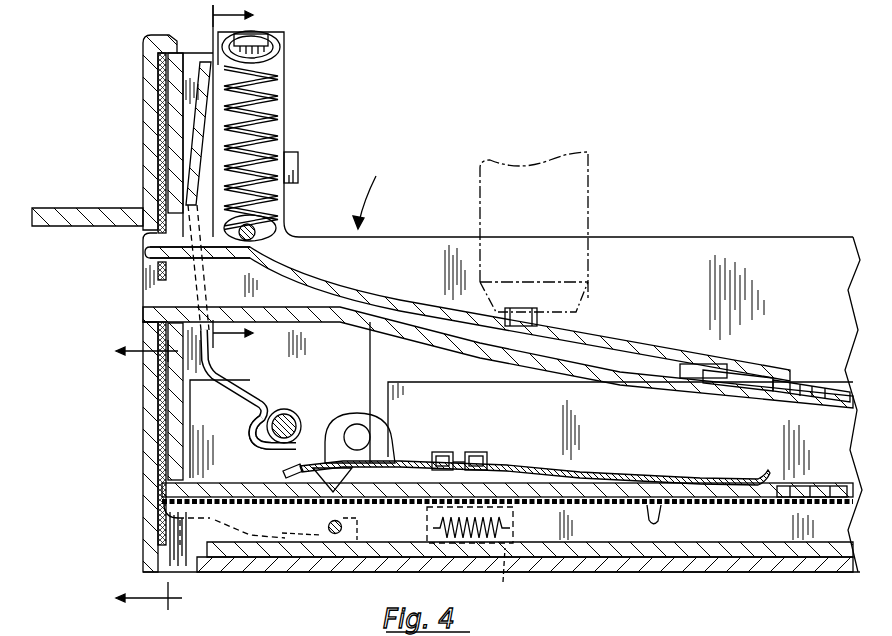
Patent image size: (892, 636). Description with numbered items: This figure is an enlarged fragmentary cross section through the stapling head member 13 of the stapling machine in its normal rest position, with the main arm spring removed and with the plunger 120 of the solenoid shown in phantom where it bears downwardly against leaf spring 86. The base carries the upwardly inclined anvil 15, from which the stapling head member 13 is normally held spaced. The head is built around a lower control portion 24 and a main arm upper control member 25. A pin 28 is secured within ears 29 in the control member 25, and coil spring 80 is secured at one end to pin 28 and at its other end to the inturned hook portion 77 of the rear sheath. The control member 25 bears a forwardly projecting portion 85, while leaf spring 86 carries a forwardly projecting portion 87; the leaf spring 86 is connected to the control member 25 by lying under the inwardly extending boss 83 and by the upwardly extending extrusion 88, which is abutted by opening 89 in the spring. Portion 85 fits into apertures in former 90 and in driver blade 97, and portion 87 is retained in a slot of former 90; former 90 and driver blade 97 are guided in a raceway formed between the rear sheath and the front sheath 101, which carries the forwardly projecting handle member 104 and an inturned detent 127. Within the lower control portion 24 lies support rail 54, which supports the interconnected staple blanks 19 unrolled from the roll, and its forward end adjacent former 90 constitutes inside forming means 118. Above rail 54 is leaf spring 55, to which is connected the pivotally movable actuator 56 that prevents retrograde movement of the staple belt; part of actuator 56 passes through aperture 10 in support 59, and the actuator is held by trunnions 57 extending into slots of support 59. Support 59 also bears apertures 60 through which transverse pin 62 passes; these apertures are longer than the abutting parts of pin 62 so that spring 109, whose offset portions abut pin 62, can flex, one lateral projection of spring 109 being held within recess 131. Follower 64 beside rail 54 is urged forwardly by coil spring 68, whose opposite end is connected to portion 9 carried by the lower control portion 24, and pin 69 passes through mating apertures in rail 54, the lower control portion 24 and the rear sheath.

The portions 9 is at (502, 576).
The aperture 10 is at (135, 476).
The stapling head member 13 is at (308, 183).
The anvil 15 is at (152, 632).
The staple blanks 19 is at (652, 512).
The lower control portion 24 is at (678, 572).
The control member 25 is at (704, 258).
The pin 28 is at (255, 230).
The ears 29 is at (292, 190).
The support rail 54 is at (620, 535).
The leaf spring 55 is at (596, 470).
The actuator 56 is at (383, 457).
The trunnions 57 is at (360, 436).
The support 59 is at (433, 392).
The apertures 60 is at (254, 435).
The transverse pin 62 is at (300, 412).
The follower 64 is at (223, 560).
The coil spring 68 is at (515, 518).
The pin 69 is at (337, 536).
The inturned hook portion 77 is at (250, 40).
The coil spring 80 is at (262, 97).
The boss 83 is at (526, 312).
The forwardly projecting portion 85 is at (162, 296).
The leaf spring 86 is at (383, 304).
The forwardly projecting portion 87 is at (150, 255).
The extrusion 88 is at (720, 368).
The opening 89 is at (713, 362).
The former 90 is at (160, 394).
The driver blade 97 is at (157, 474).
The front sheath 101 is at (147, 500).
The handle member 104 is at (68, 208).
The spring 109 is at (242, 388).
The inside forming means 118 is at (160, 522).
The plunger 120 is at (592, 212).
The detent 127 is at (173, 34).
The recess 131 is at (198, 62).